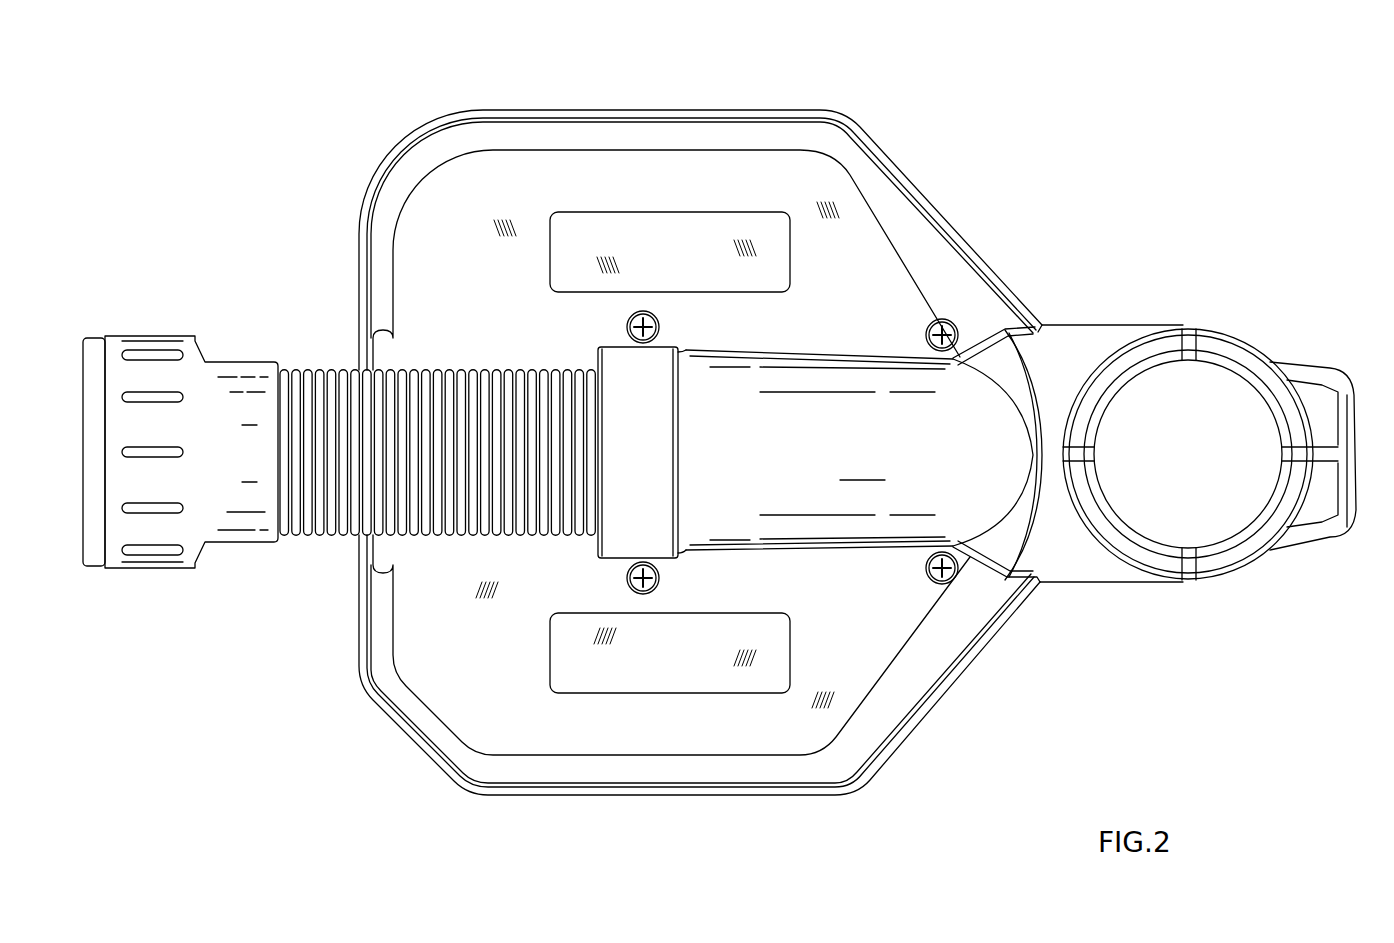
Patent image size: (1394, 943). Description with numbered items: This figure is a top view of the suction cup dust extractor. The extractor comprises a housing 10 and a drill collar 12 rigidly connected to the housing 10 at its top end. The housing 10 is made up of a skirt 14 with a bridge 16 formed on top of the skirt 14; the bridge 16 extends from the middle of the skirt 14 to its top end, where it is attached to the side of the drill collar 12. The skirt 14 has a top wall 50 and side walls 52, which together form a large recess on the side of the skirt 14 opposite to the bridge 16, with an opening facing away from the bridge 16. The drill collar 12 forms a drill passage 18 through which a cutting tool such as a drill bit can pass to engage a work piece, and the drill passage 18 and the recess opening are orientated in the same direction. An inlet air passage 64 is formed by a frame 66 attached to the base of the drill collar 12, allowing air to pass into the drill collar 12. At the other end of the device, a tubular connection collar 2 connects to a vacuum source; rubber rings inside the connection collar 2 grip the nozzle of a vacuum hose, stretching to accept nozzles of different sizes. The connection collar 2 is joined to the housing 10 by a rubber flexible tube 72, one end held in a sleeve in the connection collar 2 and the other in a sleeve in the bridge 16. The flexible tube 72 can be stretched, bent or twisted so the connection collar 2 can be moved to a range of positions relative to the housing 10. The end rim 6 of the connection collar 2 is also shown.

The housing 10 is at (738, 414).
The tubular connection collar 2 is at (115, 552).
The coupling end rim 6 is at (96, 558).
The drill collar 12 is at (1228, 573).
The skirt 14 is at (497, 313).
The bridge 16 is at (773, 468).
The drill passage 18 is at (1182, 448).
The top wall 50 is at (463, 205).
The side walls 52 is at (573, 110).
The inlet air passage 64 is at (1313, 398).
The frame 66 is at (1338, 502).
The flexible tube 72 is at (315, 530).